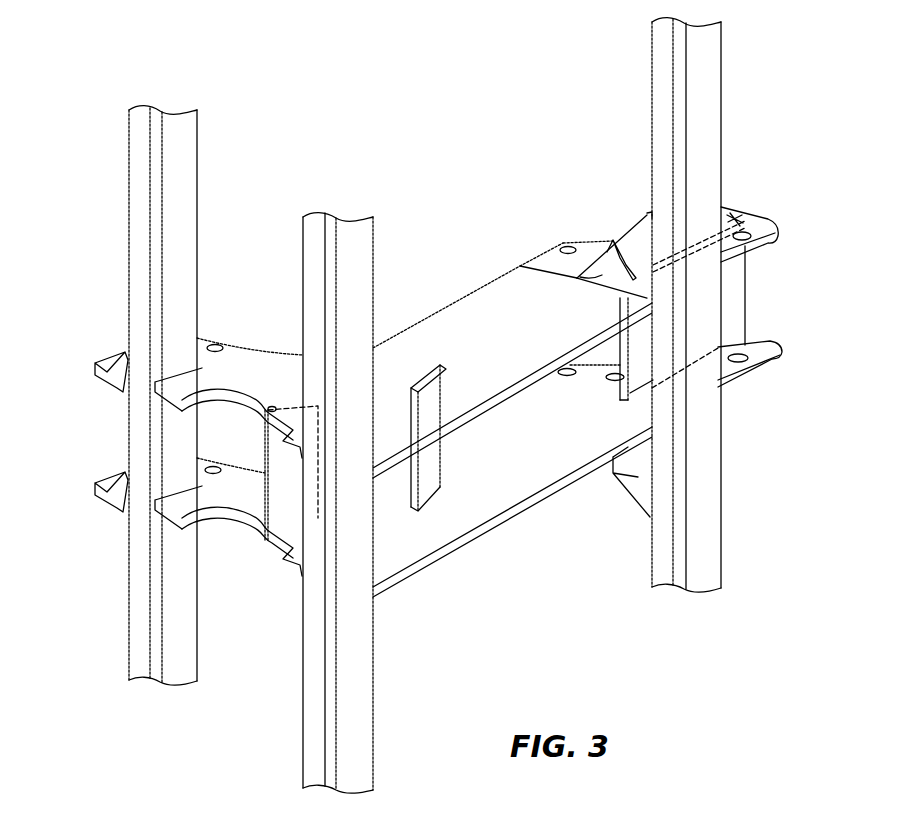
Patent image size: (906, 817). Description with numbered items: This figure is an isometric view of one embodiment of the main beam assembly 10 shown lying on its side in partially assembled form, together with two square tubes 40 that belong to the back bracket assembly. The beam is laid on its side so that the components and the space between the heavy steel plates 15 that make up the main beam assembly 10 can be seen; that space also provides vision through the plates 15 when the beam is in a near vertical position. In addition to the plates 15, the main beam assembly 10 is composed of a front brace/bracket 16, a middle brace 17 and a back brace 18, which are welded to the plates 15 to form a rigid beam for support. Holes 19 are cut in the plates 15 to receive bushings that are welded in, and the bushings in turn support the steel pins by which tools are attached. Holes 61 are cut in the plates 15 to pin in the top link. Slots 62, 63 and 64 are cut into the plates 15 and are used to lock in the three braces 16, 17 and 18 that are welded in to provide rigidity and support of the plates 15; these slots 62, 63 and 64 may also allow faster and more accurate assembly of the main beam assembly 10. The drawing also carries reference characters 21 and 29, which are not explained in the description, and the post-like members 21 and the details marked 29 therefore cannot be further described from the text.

The main beam assembly 10 is at (474, 148).
The plates 15 is at (255, 356).
The front brace/bracket 16 is at (735, 302).
The middle brace 17 is at (430, 460).
The back brace 18 is at (280, 510).
The holes 19 is at (613, 240).
The post 21 is at (708, 472).
The plate 29 is at (520, 266).
The square tubes 40 is at (133, 603).
The holes 61 is at (568, 246).
The slot 62 is at (422, 375).
The slot 63 is at (735, 212).
The slot 64 is at (270, 410).